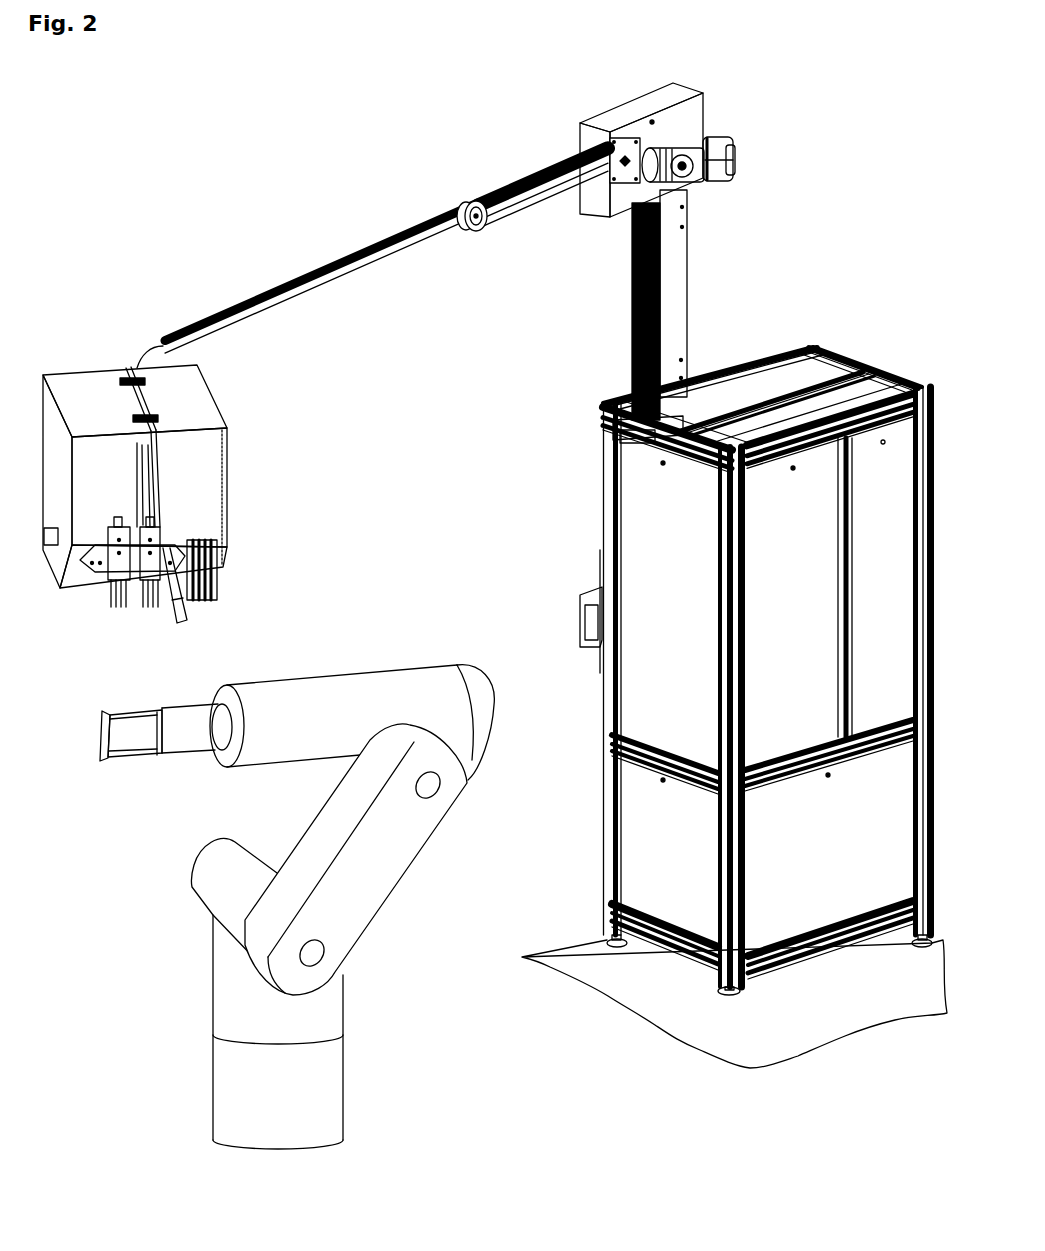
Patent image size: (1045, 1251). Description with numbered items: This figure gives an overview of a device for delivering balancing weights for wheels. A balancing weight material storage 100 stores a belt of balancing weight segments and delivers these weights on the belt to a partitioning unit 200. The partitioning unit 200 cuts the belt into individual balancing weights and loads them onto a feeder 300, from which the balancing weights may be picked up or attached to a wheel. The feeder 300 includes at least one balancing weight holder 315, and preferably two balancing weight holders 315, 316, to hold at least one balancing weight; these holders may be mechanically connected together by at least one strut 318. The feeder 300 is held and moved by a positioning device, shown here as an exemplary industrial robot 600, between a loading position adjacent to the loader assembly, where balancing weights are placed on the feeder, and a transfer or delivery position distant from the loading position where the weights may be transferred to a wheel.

The balancing weight material storage 100 is at (586, 474).
The partitioning unit 200 is at (252, 465).
The feeder 300 is at (126, 900).
The balancing weight holder 315 is at (108, 762).
The balancing weight holder 316 is at (155, 712).
The strut 318 is at (143, 758).
The industrial robot 600 is at (363, 893).